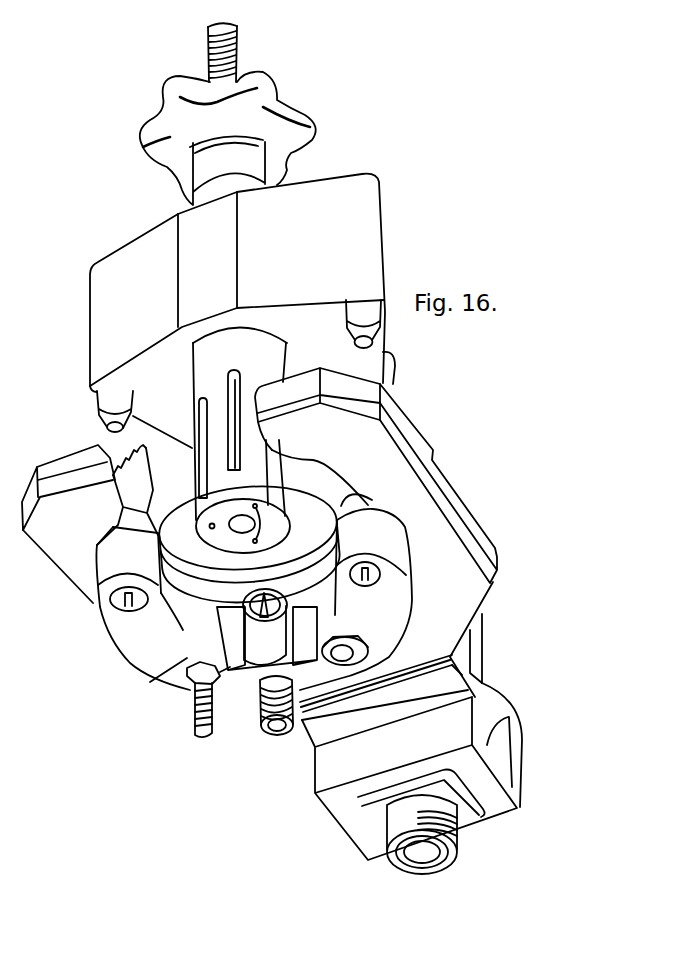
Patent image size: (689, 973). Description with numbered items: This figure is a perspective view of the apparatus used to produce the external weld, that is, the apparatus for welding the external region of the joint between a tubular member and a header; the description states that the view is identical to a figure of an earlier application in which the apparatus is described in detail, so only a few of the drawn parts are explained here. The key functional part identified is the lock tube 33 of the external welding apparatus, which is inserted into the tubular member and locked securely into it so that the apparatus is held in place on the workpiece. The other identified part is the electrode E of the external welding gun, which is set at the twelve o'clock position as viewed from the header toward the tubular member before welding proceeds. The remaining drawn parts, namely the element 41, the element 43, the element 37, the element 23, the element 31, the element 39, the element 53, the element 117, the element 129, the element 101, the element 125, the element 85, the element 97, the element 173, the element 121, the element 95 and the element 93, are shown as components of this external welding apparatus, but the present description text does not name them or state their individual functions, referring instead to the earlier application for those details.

The threaded rod 41 is at (237, 45).
The star knob 43 is at (305, 119).
The knob assembly 37 is at (322, 85).
The cylindrical housing 23 is at (202, 357).
The lock tube 33 is at (203, 461).
The ring collar 31 is at (211, 483).
The pin hole 39 is at (207, 527).
The central aperture 53 is at (266, 520).
The electrode E is at (262, 621).
The clamp bracket 117 is at (395, 633).
The mounting hole 129 is at (127, 612).
The rack lever 101 is at (143, 445).
The stop tab 125 is at (370, 502).
The mounting bar 85 is at (449, 497).
The base plate 97 is at (478, 594).
The screw 173 is at (268, 660).
The threaded sleeve 121 is at (270, 730).
The boss 95 is at (512, 772).
The screw plug 93 is at (455, 836).